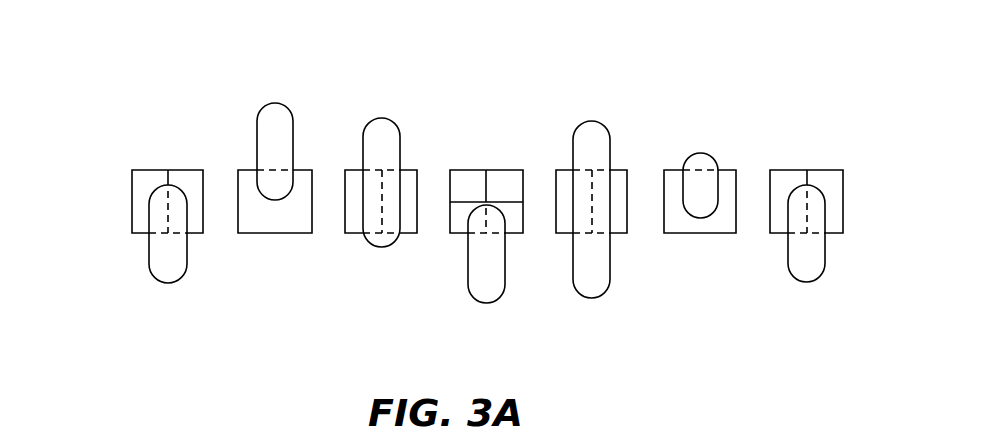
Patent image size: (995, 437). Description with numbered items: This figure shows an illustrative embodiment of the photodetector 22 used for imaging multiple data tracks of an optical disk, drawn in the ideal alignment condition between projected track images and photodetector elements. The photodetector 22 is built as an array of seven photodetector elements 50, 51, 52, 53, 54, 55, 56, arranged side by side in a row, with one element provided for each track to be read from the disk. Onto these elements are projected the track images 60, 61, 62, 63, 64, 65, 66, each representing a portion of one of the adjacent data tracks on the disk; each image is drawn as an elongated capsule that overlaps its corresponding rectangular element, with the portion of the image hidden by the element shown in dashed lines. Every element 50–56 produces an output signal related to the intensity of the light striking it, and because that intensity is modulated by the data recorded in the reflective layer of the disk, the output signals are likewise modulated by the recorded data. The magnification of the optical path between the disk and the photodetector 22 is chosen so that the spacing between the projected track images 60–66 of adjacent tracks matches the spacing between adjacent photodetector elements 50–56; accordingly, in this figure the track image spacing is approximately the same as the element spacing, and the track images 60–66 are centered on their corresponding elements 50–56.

The photodetector 22 is at (161, 57).
The photodetector element 50 is at (473, 170).
The photodetector element 51 is at (407, 170).
The photodetector element 52 is at (618, 170).
The photodetector element 53 is at (245, 170).
The photodetector element 54 is at (720, 170).
The photodetector element 55 is at (135, 170).
The photodetector element 56 is at (808, 170).
The track image 60 is at (470, 296).
The track image 61 is at (377, 247).
The track image 62 is at (578, 290).
The track image 63 is at (276, 104).
The track image 64 is at (700, 219).
The track image 65 is at (149, 256).
The track image 66 is at (807, 283).